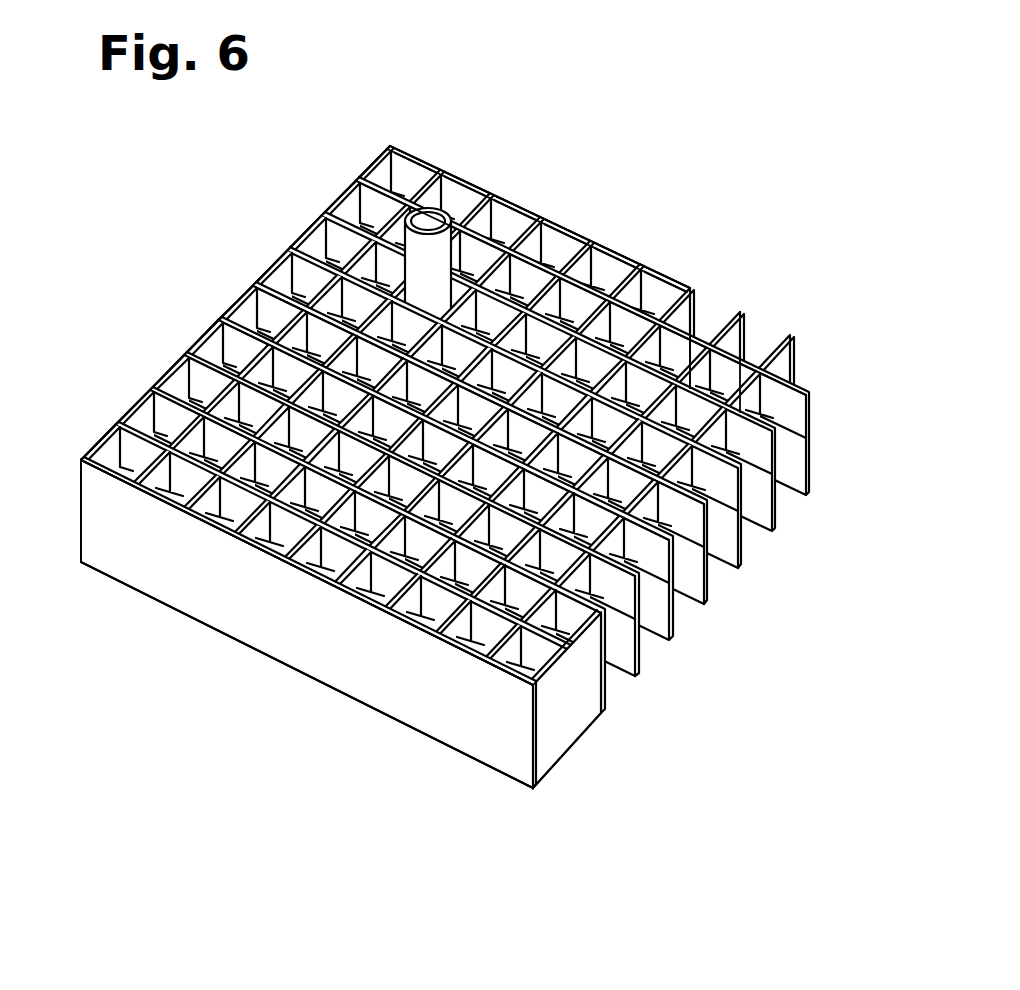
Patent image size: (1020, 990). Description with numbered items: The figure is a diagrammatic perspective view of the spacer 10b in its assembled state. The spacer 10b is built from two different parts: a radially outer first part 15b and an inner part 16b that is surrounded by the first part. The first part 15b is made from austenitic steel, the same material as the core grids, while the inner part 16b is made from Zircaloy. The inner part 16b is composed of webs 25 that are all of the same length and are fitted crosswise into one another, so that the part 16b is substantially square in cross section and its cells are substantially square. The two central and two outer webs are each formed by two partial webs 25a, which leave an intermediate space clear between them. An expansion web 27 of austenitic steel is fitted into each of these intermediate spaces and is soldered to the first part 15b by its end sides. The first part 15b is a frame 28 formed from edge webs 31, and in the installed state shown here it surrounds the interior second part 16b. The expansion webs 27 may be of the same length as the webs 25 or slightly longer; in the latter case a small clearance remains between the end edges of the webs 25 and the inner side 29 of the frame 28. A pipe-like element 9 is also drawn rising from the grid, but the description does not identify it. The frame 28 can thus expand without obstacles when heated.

The pipe 9 is at (434, 266).
The spacer 10b is at (650, 192).
The inner side of the frame 29 is at (562, 247).
The expansion web 27 is at (689, 332).
The web 25 is at (757, 497).
The partial web 25a is at (227, 410).
The frame 28 is at (558, 727).
The edge web 31 is at (437, 727).
The first part 15b is at (260, 628).
The inner part 16b is at (205, 505).